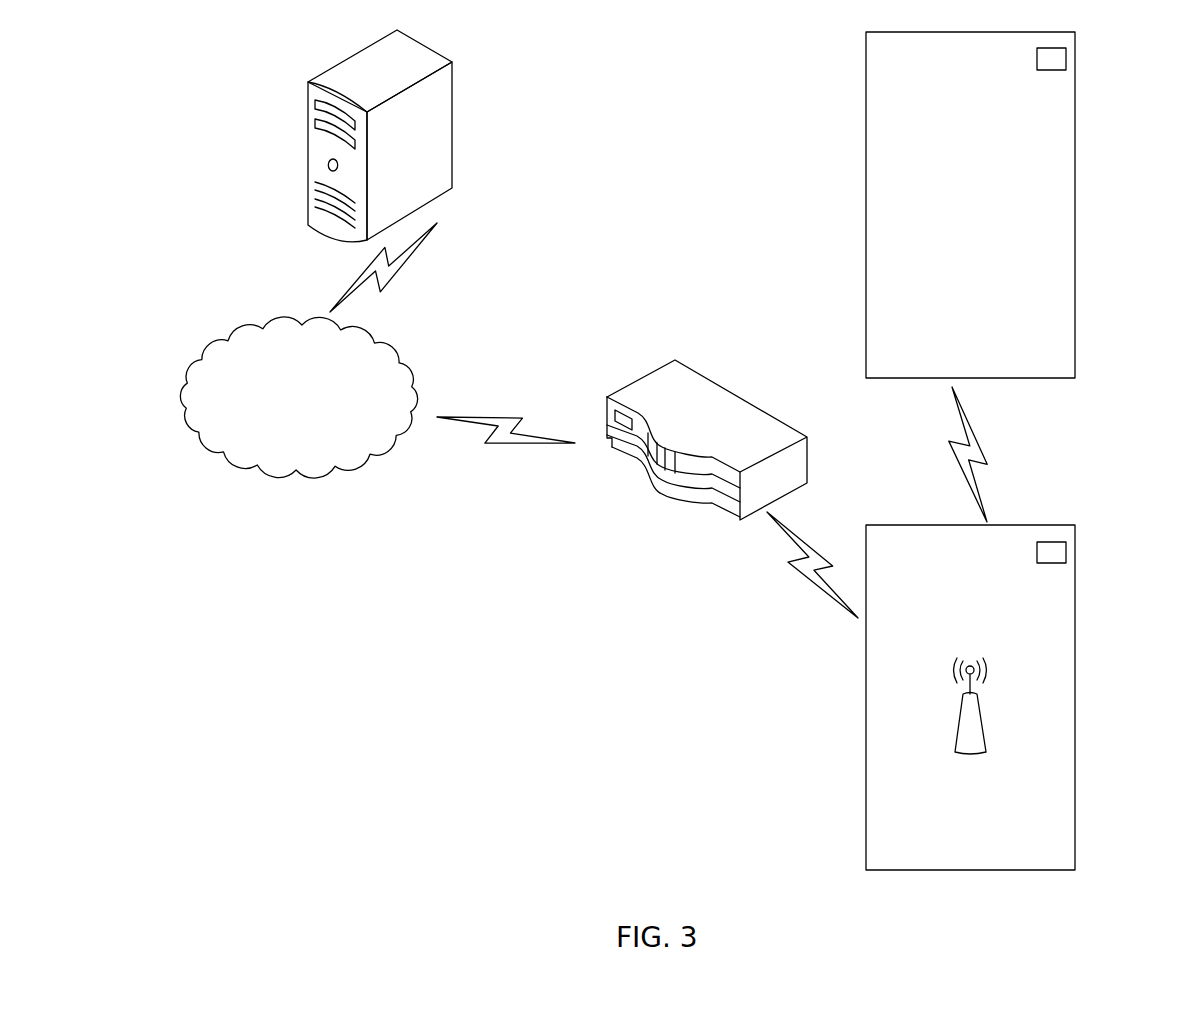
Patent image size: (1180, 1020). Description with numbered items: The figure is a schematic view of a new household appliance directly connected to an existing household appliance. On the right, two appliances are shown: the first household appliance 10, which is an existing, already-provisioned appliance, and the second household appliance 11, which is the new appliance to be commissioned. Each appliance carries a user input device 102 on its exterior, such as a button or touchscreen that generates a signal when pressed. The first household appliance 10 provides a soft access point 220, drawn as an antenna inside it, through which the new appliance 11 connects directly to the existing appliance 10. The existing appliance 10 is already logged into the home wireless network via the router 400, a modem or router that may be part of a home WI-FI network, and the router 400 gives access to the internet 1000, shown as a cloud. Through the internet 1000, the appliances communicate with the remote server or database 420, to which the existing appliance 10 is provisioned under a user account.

The first household appliance 10 is at (866, 753).
The second household appliance 11 is at (866, 130).
The user input device 102 is at (1060, 60).
The soft access point 220 is at (968, 722).
The router 400 is at (670, 383).
The remote server or database 420 is at (432, 167).
The internet 1000 is at (293, 455).